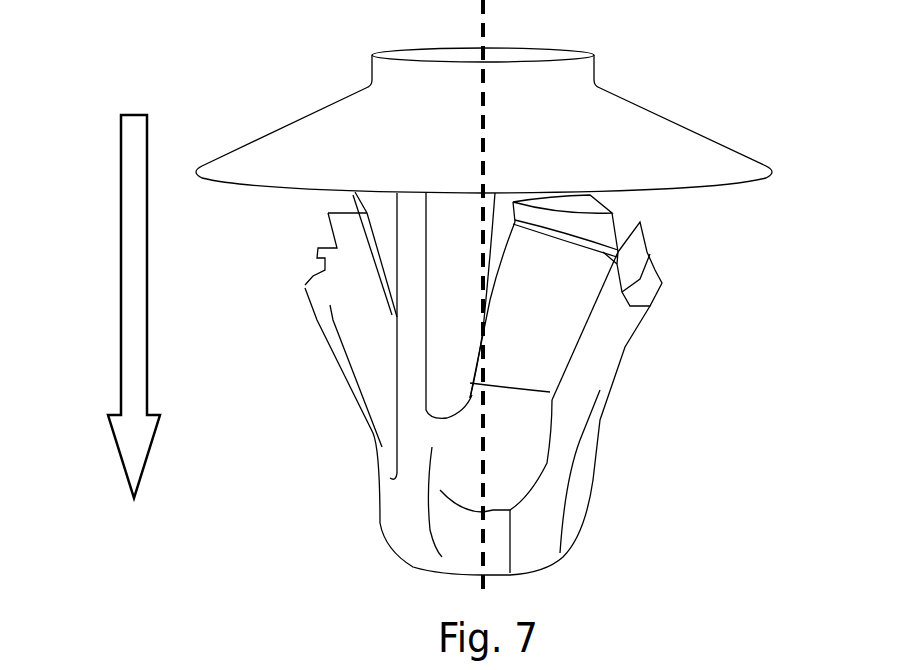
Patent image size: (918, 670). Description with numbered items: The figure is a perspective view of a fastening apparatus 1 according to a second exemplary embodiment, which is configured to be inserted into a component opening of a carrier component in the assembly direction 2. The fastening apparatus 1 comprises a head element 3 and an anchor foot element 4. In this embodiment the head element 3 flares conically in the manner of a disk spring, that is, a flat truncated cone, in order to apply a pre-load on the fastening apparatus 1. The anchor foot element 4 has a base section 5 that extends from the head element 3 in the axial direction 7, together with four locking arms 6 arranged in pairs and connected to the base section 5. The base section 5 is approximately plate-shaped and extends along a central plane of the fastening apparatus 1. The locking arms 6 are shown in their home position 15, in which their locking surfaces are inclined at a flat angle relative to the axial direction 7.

The fastening apparatus 1 is at (122, 66).
The assembly direction 2 is at (121, 180).
The head element 3 is at (448, 148).
The anchor foot element 4 is at (699, 390).
The base section 5 is at (443, 317).
The locking arms 6 is at (322, 291).
The axial direction 7 is at (483, 25).
The home position 15 is at (331, 470).